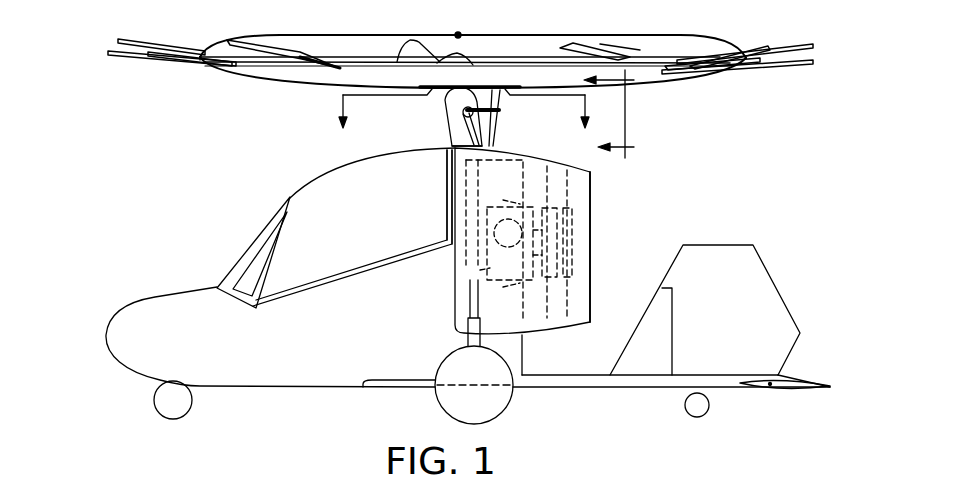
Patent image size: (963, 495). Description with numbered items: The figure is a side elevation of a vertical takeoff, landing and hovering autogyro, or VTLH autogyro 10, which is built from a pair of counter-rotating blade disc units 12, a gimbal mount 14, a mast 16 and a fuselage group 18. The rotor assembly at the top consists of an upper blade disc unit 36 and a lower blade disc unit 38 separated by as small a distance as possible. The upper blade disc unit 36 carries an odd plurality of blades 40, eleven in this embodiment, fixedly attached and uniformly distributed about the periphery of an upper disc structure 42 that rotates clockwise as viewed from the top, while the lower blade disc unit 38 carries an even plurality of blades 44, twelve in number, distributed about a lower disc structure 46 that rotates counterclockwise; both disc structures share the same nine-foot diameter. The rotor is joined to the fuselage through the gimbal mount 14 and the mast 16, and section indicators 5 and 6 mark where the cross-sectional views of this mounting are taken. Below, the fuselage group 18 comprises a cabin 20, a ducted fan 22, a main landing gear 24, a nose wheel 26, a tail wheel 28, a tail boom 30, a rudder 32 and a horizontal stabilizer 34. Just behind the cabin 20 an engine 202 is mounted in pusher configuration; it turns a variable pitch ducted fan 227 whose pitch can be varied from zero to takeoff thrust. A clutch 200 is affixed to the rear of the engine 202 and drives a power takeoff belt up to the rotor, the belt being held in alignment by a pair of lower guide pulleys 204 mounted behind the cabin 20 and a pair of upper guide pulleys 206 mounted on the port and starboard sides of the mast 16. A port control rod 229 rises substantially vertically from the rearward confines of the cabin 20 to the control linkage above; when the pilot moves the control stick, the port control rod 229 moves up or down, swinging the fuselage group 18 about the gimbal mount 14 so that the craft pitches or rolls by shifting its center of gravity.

The VTLH autogyro 10 is at (137, 405).
The pair of counter-rotating blade disc units 12 is at (184, 87).
The gimbal mount 14 is at (441, 112).
The mast 16 is at (462, 146).
The fuselage group 18 is at (155, 289).
The cabin 20 is at (323, 190).
The ducted fan 22 is at (598, 170).
The main landing gear 24 is at (450, 405).
The nose wheel 26 is at (183, 400).
The tail wheel 28 is at (709, 405).
The tail boom 30 is at (577, 392).
The rudder 32 is at (717, 255).
The horizontal stabilizer 34 is at (793, 388).
The upper blade disc unit 36 is at (690, 41).
The lower blade disc unit 38 is at (690, 82).
The odd plurality of blades 40 is at (118, 40).
The upper disc structure 42 is at (547, 42).
The even plurality of blades 44 is at (113, 57).
The lower disc structure 46 is at (318, 78).
The clutch 200 is at (456, 222).
The engine 202 is at (480, 270).
The pair of lower guide pulleys 204 is at (452, 192).
The pair of upper guide pulleys 206 is at (462, 114).
The variable pitch ducted fan 227 is at (592, 198).
The port control rod 229 is at (498, 118).
The section line 5 is at (466, 126).
The section line 6 is at (616, 114).